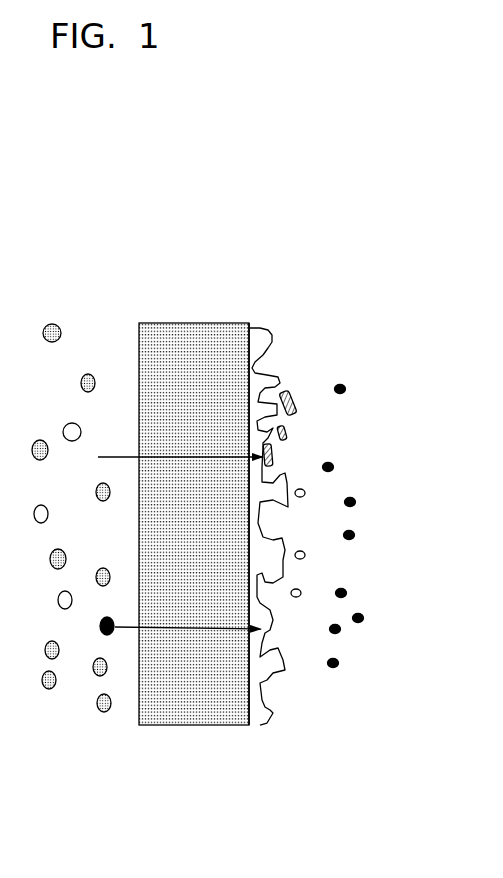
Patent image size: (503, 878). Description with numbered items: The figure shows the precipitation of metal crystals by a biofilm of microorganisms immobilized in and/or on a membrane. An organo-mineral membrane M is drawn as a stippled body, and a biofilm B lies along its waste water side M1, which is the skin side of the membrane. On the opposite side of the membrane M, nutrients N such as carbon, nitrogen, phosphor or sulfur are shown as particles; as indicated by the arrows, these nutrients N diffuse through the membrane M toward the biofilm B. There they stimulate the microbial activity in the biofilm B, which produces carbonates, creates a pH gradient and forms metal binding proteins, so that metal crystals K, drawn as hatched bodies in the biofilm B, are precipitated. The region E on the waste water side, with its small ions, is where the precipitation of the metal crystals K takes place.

The organo-mineral membrane M is at (182, 727).
The waste water side M1 is at (254, 717).
The biofilm B is at (288, 674).
The metal crystals K is at (276, 453).
The nutrients N is at (58, 720).
The electrolyte region E is at (349, 681).